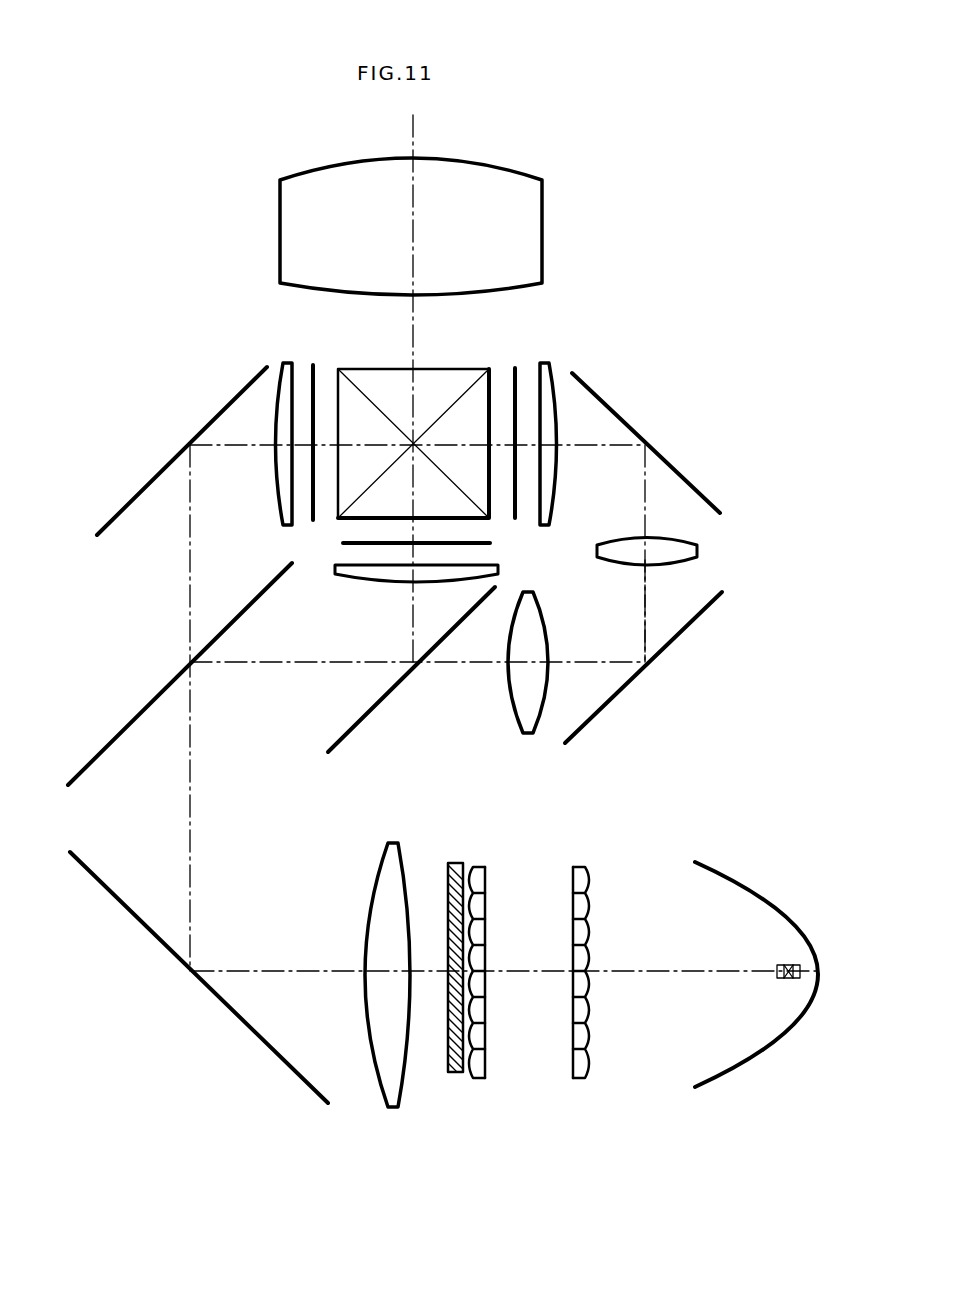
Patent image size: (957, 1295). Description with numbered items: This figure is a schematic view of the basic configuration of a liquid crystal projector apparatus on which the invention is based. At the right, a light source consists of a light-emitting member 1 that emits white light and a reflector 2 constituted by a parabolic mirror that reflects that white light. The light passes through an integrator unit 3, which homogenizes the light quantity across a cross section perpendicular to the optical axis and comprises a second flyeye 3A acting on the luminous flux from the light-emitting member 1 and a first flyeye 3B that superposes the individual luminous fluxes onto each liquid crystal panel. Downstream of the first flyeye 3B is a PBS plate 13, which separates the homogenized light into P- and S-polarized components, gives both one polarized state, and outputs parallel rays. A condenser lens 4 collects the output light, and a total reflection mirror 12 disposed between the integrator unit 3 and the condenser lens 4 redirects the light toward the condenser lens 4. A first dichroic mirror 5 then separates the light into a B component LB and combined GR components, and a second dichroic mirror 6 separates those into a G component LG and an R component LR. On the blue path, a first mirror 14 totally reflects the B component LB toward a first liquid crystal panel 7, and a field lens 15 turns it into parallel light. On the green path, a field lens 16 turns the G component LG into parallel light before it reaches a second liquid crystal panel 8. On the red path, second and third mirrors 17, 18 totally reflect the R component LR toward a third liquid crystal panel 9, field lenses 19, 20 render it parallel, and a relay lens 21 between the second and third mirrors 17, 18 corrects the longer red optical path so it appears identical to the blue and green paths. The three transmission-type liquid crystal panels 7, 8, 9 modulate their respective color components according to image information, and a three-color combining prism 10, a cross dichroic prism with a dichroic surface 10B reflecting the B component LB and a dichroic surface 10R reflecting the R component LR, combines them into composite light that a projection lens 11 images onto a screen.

The light-emitting member 1 is at (780, 978).
The reflector 2 is at (706, 868).
The integrator unit 3 is at (536, 976).
The second flyeye 3A is at (585, 867).
The first flyeye 3B is at (482, 867).
The condenser lens 4 is at (390, 843).
The first dichroic mirror 5 is at (98, 757).
The second dichroic mirror 6 is at (352, 728).
The first liquid crystal panel 7 is at (313, 365).
The second liquid crystal panel 8 is at (490, 540).
The third liquid crystal panel 9 is at (516, 368).
The three-color combining prism 10 is at (393, 442).
The dichroic surface 10R is at (363, 392).
The dichroic surface 10B is at (347, 522).
The projection lens 11 is at (527, 200).
The total reflection mirror 12 is at (110, 890).
The PBS plate 13 is at (452, 863).
The first mirror 14 is at (168, 462).
The field lens 15 is at (280, 512).
The field lens 16 is at (500, 569).
The second mirror 17 is at (700, 612).
The third mirror 18 is at (689, 484).
The field lens 19 is at (556, 490).
The field lens 20 is at (510, 700).
The relay lens 21 is at (698, 551).
The B component LB is at (190, 578).
The G component LG is at (413, 622).
The R component LR is at (645, 597).